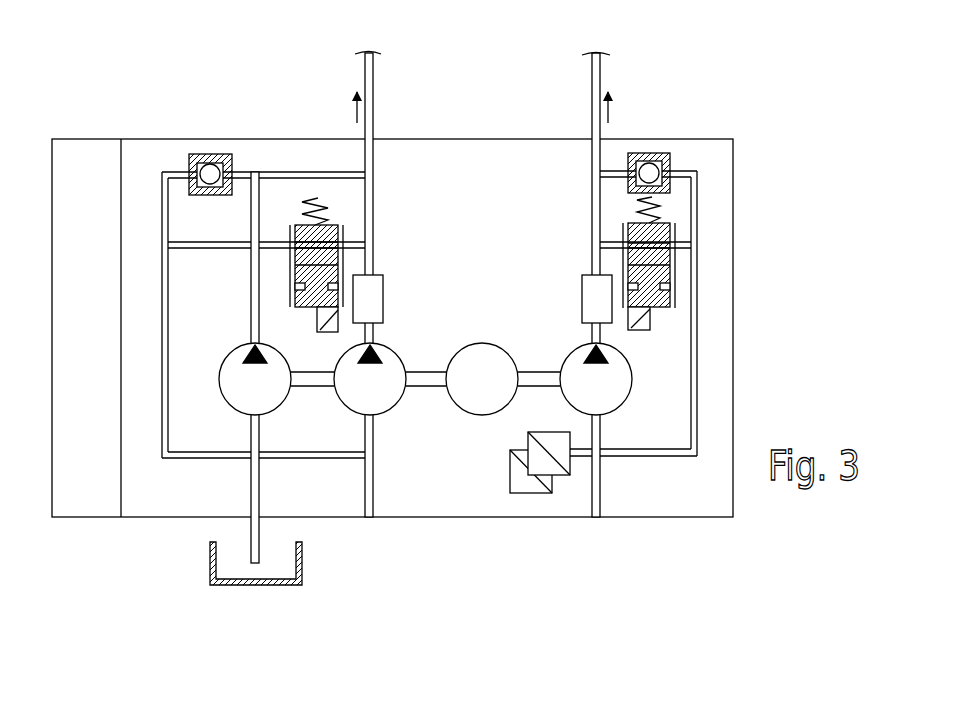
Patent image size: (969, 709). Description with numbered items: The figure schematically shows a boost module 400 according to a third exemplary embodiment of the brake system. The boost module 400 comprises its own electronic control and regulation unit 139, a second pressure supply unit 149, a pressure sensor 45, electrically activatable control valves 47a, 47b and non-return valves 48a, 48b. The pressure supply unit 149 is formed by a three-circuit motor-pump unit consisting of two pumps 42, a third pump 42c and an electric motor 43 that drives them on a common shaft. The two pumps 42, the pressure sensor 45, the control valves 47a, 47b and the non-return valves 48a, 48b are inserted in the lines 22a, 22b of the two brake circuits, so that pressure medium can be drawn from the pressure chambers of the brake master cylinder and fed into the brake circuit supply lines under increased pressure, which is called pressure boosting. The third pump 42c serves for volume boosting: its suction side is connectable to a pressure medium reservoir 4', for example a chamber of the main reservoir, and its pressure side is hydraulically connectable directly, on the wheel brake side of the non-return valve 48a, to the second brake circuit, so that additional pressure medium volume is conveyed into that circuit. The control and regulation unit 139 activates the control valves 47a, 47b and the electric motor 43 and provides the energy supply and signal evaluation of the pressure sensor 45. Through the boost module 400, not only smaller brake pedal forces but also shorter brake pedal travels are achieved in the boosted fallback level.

The boost module 400 is at (752, 188).
The electronic control and regulation unit 139 is at (87, 493).
The line 22a is at (592, 152).
The line 22b is at (373, 153).
The pump 42 is at (385, 387).
The third pump 42c is at (248, 387).
The electric motor 43 is at (492, 358).
The second pressure supply unit 149 is at (436, 330).
The non-return valve 48a is at (645, 153).
The non-return valve 48b is at (214, 153).
The electrically activatable control valve 47a is at (658, 308).
The electrically activatable control valve 47b is at (300, 268).
The pressure sensor 45 is at (530, 493).
The pressure medium reservoir 4' is at (256, 607).